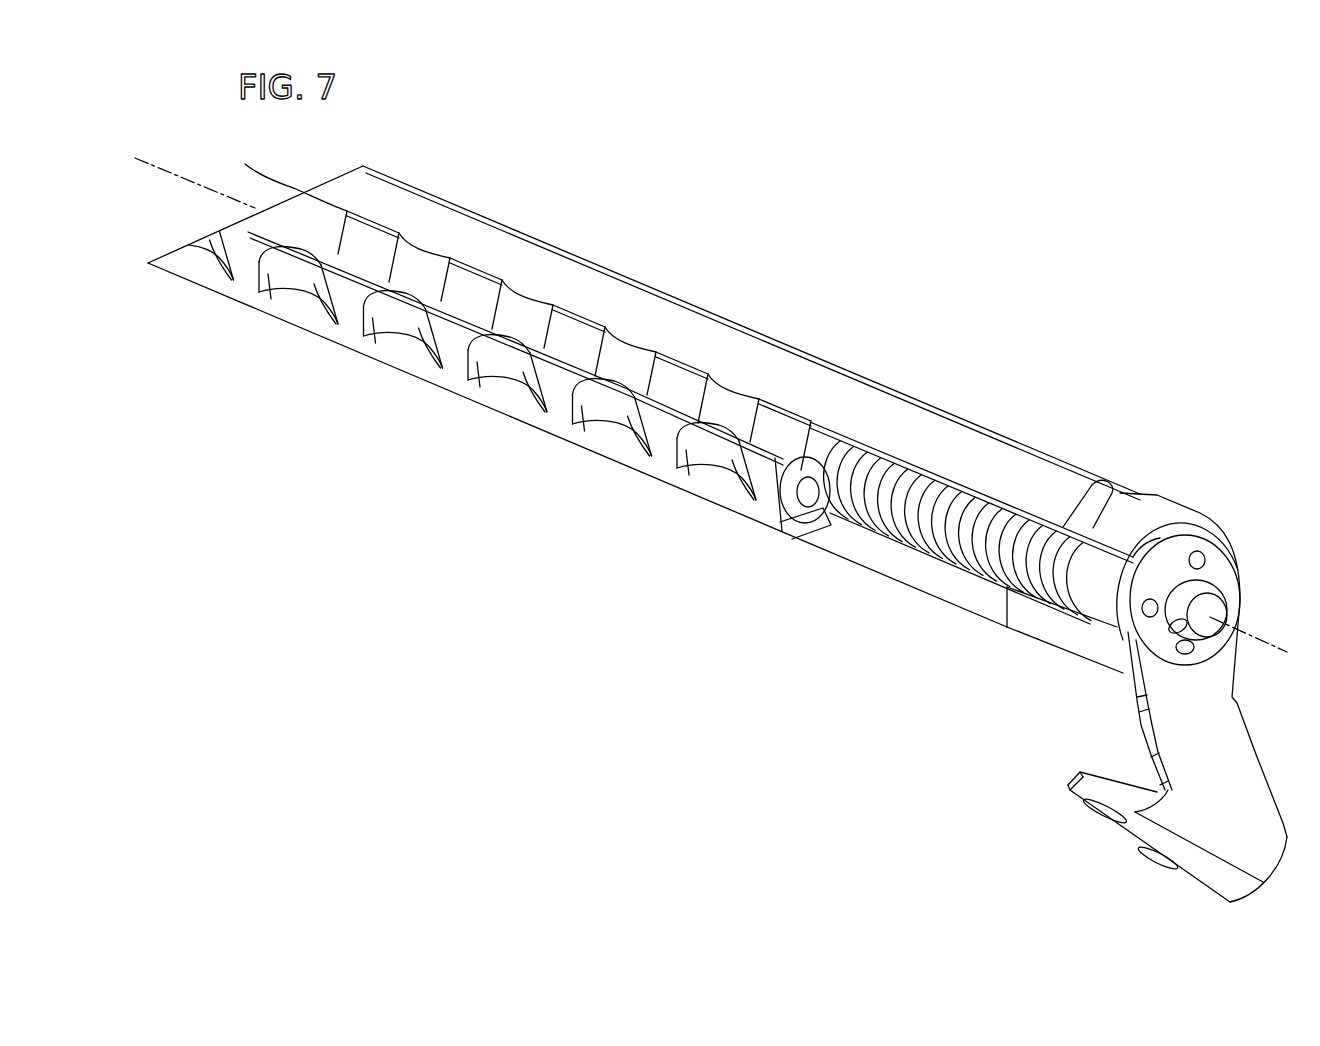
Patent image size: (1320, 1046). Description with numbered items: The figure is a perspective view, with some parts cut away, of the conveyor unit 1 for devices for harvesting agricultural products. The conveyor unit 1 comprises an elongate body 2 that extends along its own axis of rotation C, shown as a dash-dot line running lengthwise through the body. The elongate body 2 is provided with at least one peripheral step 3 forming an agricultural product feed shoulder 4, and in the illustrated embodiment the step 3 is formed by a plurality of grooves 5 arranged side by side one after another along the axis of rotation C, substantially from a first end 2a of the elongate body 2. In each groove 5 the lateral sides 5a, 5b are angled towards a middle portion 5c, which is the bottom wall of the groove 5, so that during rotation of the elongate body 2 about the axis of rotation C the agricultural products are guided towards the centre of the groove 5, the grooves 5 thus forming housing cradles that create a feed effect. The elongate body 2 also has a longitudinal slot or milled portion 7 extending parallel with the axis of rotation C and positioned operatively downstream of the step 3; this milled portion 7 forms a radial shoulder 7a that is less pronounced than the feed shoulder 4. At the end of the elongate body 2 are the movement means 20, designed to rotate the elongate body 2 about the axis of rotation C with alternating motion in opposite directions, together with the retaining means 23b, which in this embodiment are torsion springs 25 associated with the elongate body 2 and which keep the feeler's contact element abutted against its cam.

The conveyor unit 1 is at (990, 338).
The elongate body 2 is at (888, 386).
The first end 2a is at (1001, 437).
The peripheral step 3 is at (620, 383).
The agricultural product feed shoulder 4 is at (650, 364).
The groove 5 is at (509, 396).
The lateral side 5a is at (617, 347).
The lateral side 5b is at (653, 380).
The middle portion 5c is at (497, 353).
The longitudinal slot or milled portion 7 is at (415, 220).
The radial shoulder 7a is at (377, 220).
The movement means 20 is at (855, 596).
The retaining means 23b is at (943, 560).
The torsion spring 25 is at (1008, 547).
The axis of rotation C is at (1277, 642).